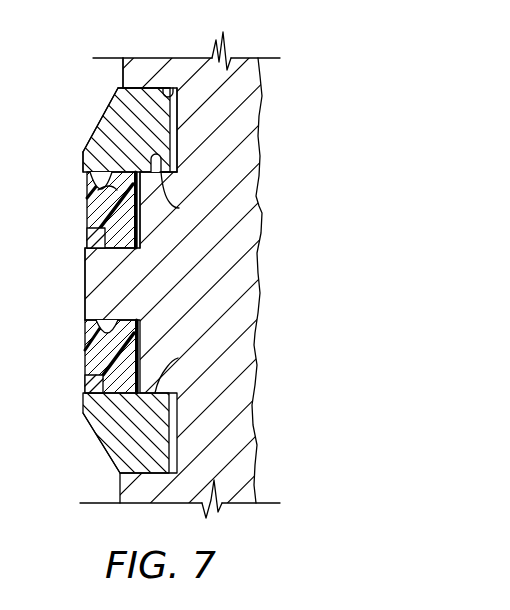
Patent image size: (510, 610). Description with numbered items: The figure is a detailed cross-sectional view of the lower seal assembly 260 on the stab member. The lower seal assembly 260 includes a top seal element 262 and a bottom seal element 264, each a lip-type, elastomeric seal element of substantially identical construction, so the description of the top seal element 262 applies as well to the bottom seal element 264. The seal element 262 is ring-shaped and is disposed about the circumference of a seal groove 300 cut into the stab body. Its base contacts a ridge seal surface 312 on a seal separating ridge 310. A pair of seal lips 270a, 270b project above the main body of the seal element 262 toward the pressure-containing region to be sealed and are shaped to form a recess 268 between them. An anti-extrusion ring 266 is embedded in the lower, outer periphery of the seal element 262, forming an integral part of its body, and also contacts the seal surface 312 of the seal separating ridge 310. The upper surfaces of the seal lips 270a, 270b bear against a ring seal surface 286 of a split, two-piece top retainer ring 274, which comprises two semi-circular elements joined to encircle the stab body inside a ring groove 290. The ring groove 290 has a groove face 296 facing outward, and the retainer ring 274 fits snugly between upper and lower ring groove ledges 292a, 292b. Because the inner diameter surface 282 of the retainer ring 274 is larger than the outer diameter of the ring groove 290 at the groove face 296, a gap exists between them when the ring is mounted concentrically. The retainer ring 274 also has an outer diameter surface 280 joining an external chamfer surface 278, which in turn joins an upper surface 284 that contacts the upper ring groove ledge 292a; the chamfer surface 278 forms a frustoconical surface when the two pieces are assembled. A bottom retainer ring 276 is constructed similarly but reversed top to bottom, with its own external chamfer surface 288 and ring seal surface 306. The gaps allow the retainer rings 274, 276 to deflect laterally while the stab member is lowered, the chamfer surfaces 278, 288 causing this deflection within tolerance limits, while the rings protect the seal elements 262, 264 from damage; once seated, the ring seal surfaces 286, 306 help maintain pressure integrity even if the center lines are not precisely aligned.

The lower seal assembly 260 is at (54, 73).
The seal groove 300 is at (208, 81).
The inner diameter surface 282 is at (170, 114).
The top retainer ring 274 is at (118, 111).
The external chamfer surface 278 is at (104, 131).
The outer diameter surface 280 is at (83, 162).
The upper surface 284 is at (136, 87).
The upper ring groove ledge 292a is at (175, 88).
The ring groove 290 is at (177, 129).
The groove face 296 is at (165, 157).
The lower ring groove ledge 292b is at (178, 171).
The ring seal surface 286 is at (179, 208).
The ridge seal surface 312 is at (139, 232).
The top seal element 262 is at (86, 207).
The recess 268 is at (88, 199).
The seal lip 270b is at (92, 150).
The seal lip 270a is at (93, 181).
The anti-extrusion ring 266 is at (88, 236).
The seal separating ridge 310 is at (88, 289).
The bottom seal element 264 is at (88, 357).
The ring seal surface 306 is at (178, 358).
The bottom retainer ring 276 is at (108, 430).
The external chamfer surface 288 is at (100, 440).